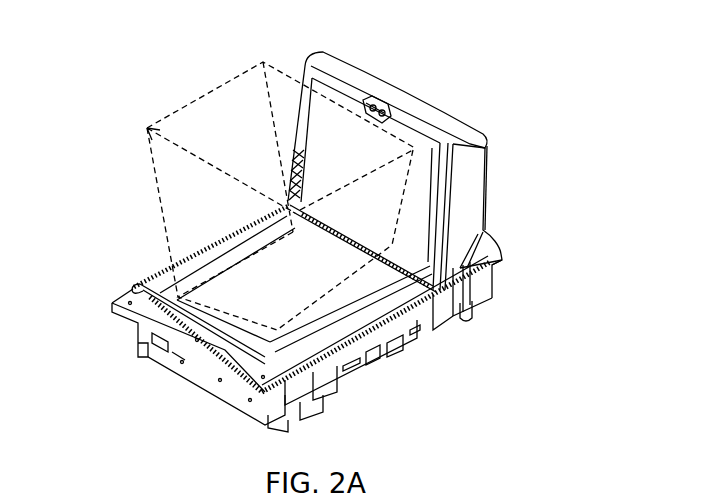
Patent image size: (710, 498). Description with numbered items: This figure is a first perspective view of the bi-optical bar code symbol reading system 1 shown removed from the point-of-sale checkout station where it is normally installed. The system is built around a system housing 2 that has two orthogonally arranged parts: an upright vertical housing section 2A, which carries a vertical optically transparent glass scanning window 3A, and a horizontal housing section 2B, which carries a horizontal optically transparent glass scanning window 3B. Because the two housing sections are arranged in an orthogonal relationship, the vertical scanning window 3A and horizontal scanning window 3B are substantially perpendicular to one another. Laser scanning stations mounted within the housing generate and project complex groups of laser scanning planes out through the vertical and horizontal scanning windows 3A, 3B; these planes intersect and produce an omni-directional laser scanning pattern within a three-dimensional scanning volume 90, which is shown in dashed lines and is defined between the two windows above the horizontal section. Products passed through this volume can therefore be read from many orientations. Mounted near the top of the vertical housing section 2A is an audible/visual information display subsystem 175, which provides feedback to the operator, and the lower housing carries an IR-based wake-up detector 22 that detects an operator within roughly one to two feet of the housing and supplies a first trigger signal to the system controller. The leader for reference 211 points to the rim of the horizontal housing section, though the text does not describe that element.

The bar code symbol reading system 1 is at (604, 164).
The system housing 2 is at (503, 257).
The vertical housing section 2A is at (453, 122).
The horizontal housing section 2B is at (390, 292).
The vertical scanning window 3A is at (404, 157).
The horizontal scanning window 3B is at (331, 284).
The IR-based wake-up detector 22 is at (206, 378).
The 3D scanning volume 90 is at (167, 118).
The audible/visual information display subsystem 175 is at (380, 98).
The platter rim 211 is at (178, 295).